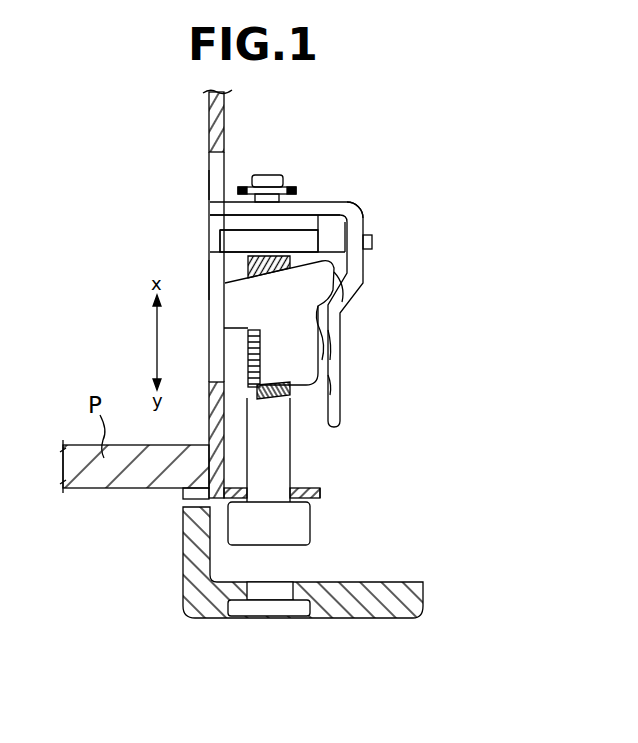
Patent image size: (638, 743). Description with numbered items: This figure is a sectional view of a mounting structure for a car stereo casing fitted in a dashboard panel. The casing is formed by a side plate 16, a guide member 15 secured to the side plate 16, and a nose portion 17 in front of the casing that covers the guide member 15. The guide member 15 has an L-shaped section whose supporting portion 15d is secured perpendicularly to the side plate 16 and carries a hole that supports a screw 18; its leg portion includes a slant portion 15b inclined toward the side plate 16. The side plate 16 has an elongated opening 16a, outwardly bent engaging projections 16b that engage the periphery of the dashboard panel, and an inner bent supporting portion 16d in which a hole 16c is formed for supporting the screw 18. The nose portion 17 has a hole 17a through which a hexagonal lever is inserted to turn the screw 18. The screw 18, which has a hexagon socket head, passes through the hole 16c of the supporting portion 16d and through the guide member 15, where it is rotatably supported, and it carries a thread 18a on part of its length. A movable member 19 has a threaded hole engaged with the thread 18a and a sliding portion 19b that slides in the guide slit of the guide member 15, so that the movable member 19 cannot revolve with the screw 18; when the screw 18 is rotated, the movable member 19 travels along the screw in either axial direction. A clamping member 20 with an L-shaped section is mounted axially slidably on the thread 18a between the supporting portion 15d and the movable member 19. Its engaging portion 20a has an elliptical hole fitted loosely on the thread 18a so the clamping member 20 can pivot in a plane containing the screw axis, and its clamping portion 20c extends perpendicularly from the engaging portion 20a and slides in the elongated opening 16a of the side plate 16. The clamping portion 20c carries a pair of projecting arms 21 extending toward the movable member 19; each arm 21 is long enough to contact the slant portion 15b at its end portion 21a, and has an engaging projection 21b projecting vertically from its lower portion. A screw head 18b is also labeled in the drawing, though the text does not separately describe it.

The guide member 15 is at (314, 299).
The slant portion 15b is at (343, 316).
The supporting portion 15d is at (343, 203).
The side plate 16 is at (220, 123).
The elongated opening 16a is at (209, 176).
The engaging projections 16b is at (184, 494).
The hole 16c is at (305, 489).
The supporting portion 16d is at (320, 497).
The nose portion 17 is at (303, 589).
The hole 17a is at (290, 594).
The screw 18 is at (314, 463).
The thread 18a is at (262, 395).
The screw head 18b is at (297, 523).
The movable member 19 is at (235, 243).
The sliding portion 19b is at (372, 242).
The clamping member 20 is at (237, 286).
The engaging portion 20a is at (289, 222).
The clamping portion 20c is at (209, 264).
The projecting arms 21 is at (348, 286).
The end portion 21a is at (341, 363).
The engaging projection 21b is at (343, 388).